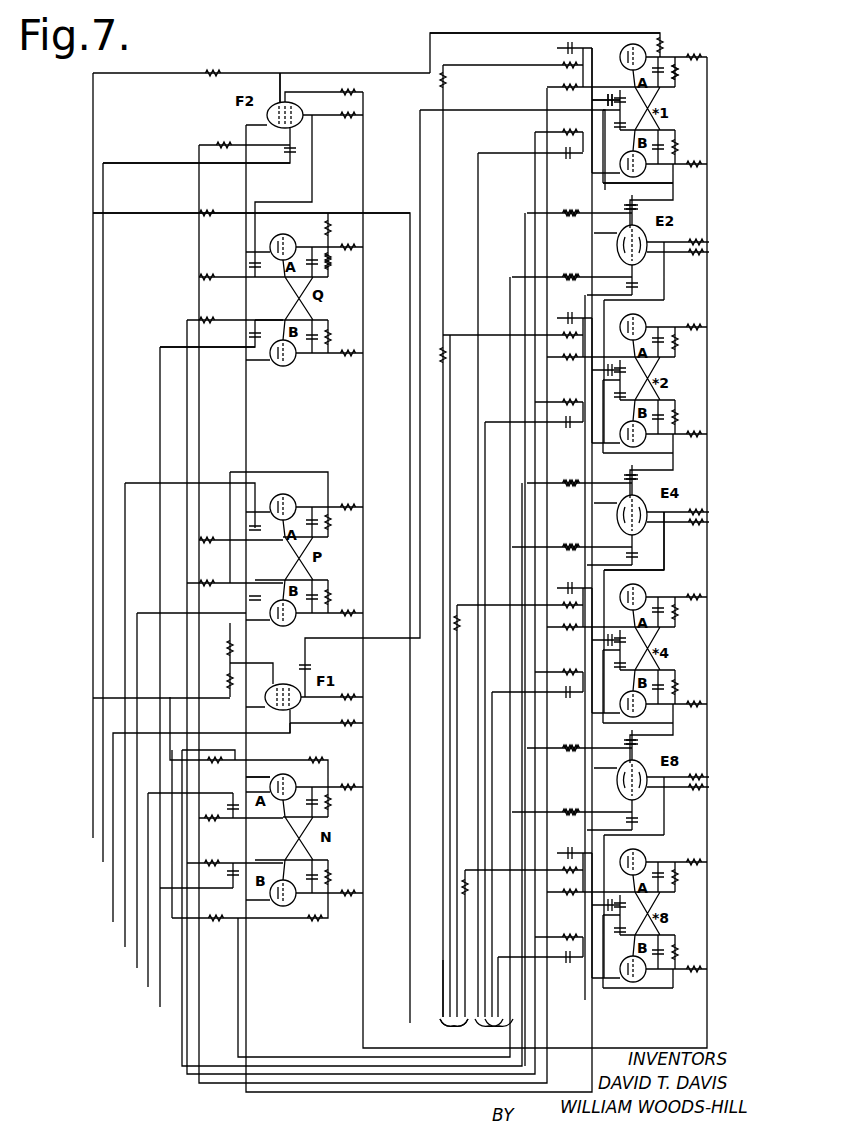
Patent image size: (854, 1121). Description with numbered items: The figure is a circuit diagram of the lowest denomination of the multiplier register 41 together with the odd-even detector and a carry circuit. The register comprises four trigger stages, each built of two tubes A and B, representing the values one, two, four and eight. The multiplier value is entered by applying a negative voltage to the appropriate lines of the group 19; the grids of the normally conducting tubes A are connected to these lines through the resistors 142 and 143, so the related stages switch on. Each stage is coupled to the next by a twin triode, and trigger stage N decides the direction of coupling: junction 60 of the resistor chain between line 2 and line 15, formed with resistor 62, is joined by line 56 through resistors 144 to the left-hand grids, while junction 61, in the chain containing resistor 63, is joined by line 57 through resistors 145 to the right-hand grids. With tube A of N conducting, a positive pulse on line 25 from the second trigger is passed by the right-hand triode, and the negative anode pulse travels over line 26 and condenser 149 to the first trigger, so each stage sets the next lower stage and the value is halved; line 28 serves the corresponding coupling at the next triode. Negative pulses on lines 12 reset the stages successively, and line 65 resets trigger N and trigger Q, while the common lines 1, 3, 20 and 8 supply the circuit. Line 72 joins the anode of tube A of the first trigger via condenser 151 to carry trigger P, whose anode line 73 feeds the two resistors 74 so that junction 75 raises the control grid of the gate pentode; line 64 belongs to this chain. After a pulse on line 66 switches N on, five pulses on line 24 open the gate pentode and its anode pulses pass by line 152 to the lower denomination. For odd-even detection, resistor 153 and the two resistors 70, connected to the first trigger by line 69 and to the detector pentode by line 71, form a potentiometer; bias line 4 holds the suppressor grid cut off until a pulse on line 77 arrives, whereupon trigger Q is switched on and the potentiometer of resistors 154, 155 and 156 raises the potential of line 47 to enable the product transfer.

The line 1 is at (248, 958).
The line 2 is at (707, 1019).
The line 3 is at (196, 956).
The bias line 4 is at (194, 197).
The line 8 is at (440, 935).
The lines 12(1), 12(2) 12 is at (483, 416).
The line 15 is at (95, 819).
The entry lines 19 is at (449, 998).
The line 20 is at (136, 960).
The line 24 is at (105, 920).
The line 25 is at (585, 308).
The line 26 is at (631, 191).
The line 28 is at (660, 555).
The multiplier register 41 is at (390, 52).
The line 47 is at (316, 210).
The line 56 is at (524, 226).
The line 57 is at (506, 284).
The junction 60 is at (240, 766).
The junction 61 is at (230, 924).
The resistor 62 is at (279, 760).
The resistor 63 is at (277, 922).
The line 64 is at (174, 706).
The line 65 is at (158, 418).
The line 66 is at (146, 980).
The connecting line 69 is at (489, 33).
The resistors 70 is at (441, 49).
The line 71 is at (302, 72).
The line 72 is at (225, 482).
The line 73 is at (305, 472).
The resistors 74 is at (217, 665).
The junction 75 is at (238, 663).
The line 77 is at (119, 163).
The resistor 142 is at (556, 69).
The resistor 143 is at (440, 890).
The resistors 144 is at (582, 213).
The resistors 145 is at (582, 276).
The condenser 149 is at (600, 100).
The condenser 151 is at (248, 528).
The line 152 is at (420, 171).
The resistor 153 is at (687, 75).
The resistor 154 is at (344, 262).
The resistor 155 is at (309, 229).
The resistor 156 is at (210, 224).